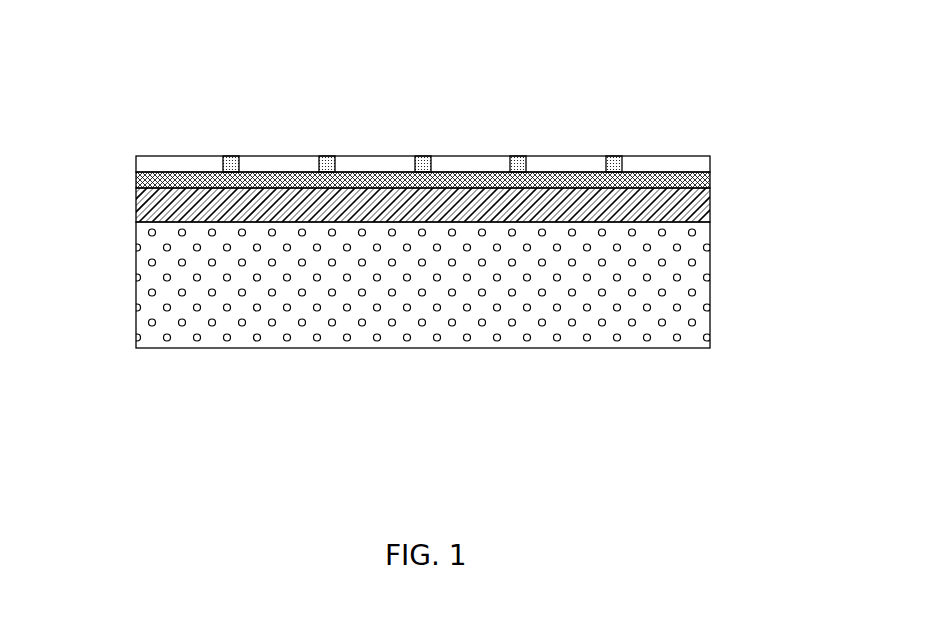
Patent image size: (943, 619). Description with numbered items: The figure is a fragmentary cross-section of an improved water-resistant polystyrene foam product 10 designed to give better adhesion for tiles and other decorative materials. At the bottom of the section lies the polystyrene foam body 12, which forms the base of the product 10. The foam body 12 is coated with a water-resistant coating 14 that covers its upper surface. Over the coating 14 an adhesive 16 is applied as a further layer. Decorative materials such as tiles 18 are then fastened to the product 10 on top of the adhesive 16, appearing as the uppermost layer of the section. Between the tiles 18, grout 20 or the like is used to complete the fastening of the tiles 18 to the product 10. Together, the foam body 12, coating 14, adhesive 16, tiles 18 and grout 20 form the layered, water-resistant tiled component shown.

The polystyrene foam product 10 is at (637, 118).
The polystyrene foam body 12 is at (438, 292).
The water-resistant coating 14 is at (141, 198).
The adhesive 16 is at (711, 180).
The tiles 18 is at (155, 161).
The grout 20 is at (428, 163).